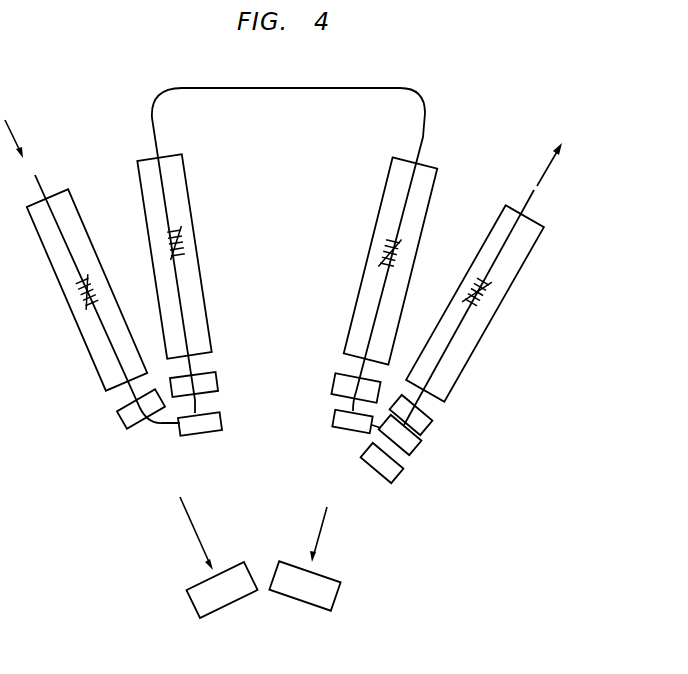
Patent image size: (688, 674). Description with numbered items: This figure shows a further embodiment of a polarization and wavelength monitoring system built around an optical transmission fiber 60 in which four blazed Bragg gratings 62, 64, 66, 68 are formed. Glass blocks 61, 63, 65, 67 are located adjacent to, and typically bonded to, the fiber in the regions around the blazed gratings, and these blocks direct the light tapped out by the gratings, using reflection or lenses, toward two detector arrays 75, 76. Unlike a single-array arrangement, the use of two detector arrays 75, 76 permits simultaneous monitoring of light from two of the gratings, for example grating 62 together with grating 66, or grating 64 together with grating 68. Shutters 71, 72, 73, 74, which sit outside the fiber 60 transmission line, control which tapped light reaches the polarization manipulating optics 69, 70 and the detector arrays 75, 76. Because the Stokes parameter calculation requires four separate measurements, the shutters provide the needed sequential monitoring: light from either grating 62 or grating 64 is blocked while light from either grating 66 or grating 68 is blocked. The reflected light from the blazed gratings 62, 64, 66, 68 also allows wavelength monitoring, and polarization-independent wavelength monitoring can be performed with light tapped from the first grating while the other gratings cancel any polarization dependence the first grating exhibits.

The optical transmission fiber 60 is at (38, 180).
The glass block 61 is at (88, 238).
The blazed Bragg grating 62 is at (72, 296).
The glass block 63 is at (191, 220).
The blazed Bragg grating 64 is at (160, 254).
The glass block 65 is at (427, 212).
The blazed Bragg grating 66 is at (378, 252).
The glass block 67 is at (530, 250).
The blazed Bragg grating 68 is at (468, 284).
The polarization manipulating optics 69 is at (221, 424).
The polarization manipulating optics 70 is at (428, 448).
The shutter 71 is at (120, 422).
The shutter 72 is at (218, 382).
The shutter 73 is at (334, 380).
The shutter 74 is at (432, 420).
The detector array 75 is at (192, 618).
The detector array 76 is at (305, 610).